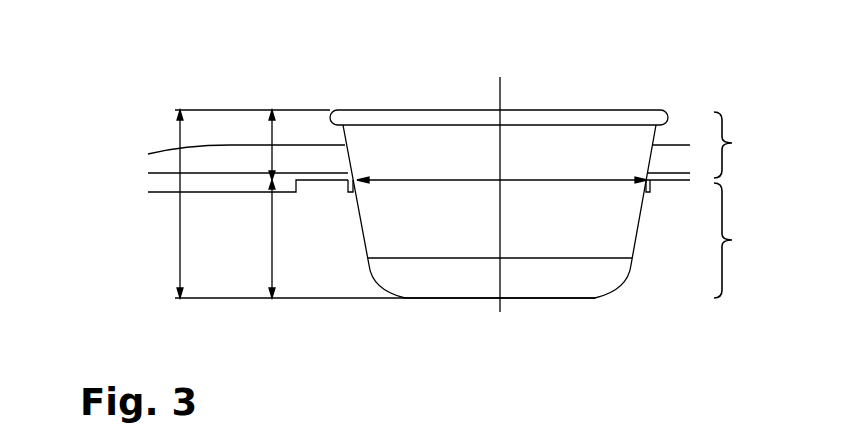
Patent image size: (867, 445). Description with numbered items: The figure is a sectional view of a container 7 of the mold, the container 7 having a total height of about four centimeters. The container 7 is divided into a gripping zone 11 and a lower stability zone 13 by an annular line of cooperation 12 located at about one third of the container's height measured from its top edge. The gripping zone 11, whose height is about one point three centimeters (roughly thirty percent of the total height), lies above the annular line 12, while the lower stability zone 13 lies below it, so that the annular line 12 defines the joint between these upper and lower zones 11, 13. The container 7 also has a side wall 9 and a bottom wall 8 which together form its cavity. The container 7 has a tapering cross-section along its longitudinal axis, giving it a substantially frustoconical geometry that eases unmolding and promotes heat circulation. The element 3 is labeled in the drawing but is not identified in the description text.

The container 7 is at (148, 87).
The annular line of cooperation 12 is at (340, 178).
The flange 3 is at (338, 180).
The side wall 9 is at (637, 230).
The bottom wall 8 is at (524, 298).
The gripping zone 11 is at (747, 145).
The lower stability zone 13 is at (747, 240).